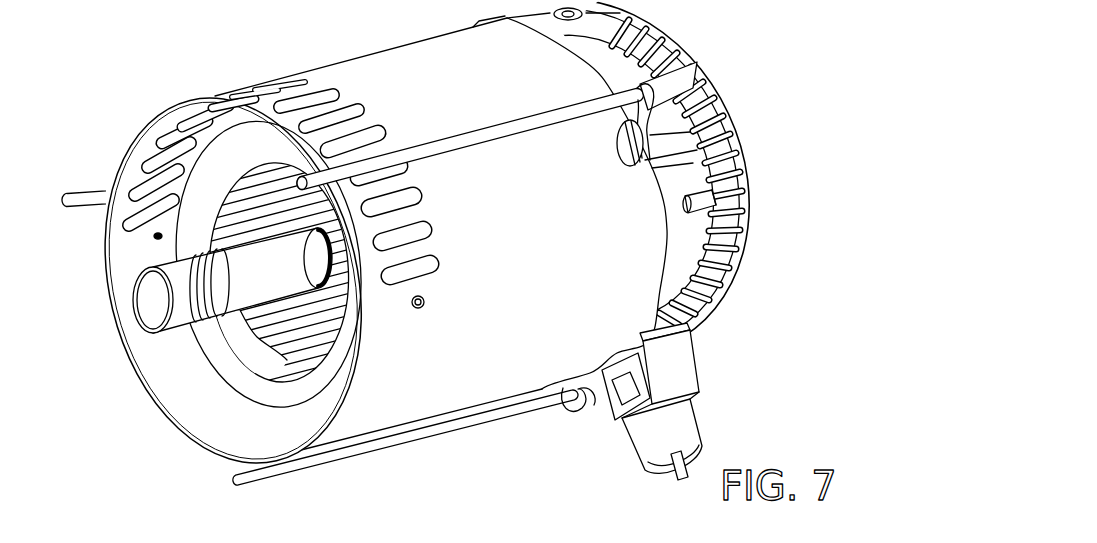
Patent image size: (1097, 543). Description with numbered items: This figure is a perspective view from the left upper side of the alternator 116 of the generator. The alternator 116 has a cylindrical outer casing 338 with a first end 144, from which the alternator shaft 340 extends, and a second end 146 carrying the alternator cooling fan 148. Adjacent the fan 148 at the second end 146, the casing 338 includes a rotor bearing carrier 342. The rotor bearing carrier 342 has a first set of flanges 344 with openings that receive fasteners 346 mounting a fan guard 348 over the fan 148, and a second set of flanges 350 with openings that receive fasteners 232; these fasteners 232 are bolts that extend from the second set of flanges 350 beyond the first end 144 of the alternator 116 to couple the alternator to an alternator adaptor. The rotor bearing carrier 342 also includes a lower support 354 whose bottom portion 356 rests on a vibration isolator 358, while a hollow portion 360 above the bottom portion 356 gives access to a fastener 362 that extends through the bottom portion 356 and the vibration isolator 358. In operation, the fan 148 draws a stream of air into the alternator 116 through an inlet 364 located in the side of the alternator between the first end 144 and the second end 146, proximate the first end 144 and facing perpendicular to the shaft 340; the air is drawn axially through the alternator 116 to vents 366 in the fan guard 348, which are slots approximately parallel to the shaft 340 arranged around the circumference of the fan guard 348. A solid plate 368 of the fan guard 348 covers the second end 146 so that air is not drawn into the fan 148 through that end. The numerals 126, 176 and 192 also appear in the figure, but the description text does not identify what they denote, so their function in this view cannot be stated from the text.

The alternator 116 is at (533, 227).
The rotor 126 is at (280, 338).
The first end 144 is at (172, 445).
The second end 146 is at (611, 203).
The alternator cooling fan 148 is at (710, 127).
The bearing 176 is at (350, 530).
The rotor core 192 is at (296, 537).
The fasteners 232 is at (470, 134).
The cylindrical outer casing 338 is at (372, 73).
The alternator shaft 340 is at (160, 272).
The rotor bearing carrier 342 is at (603, 33).
The first set of flanges 344 is at (700, 203).
The fasteners 346 is at (720, 188).
The fan guard 348 is at (748, 217).
The second set of flanges 350 is at (670, 80).
The lower support 354 is at (683, 375).
The bottom portion 356 is at (690, 397).
The vibration isolator 358 is at (682, 432).
The hollow portion 360 is at (620, 393).
The fastener 362 is at (673, 477).
The inlet 364 is at (243, 89).
The vents 366 is at (727, 248).
The solid plate 368 is at (686, 39).